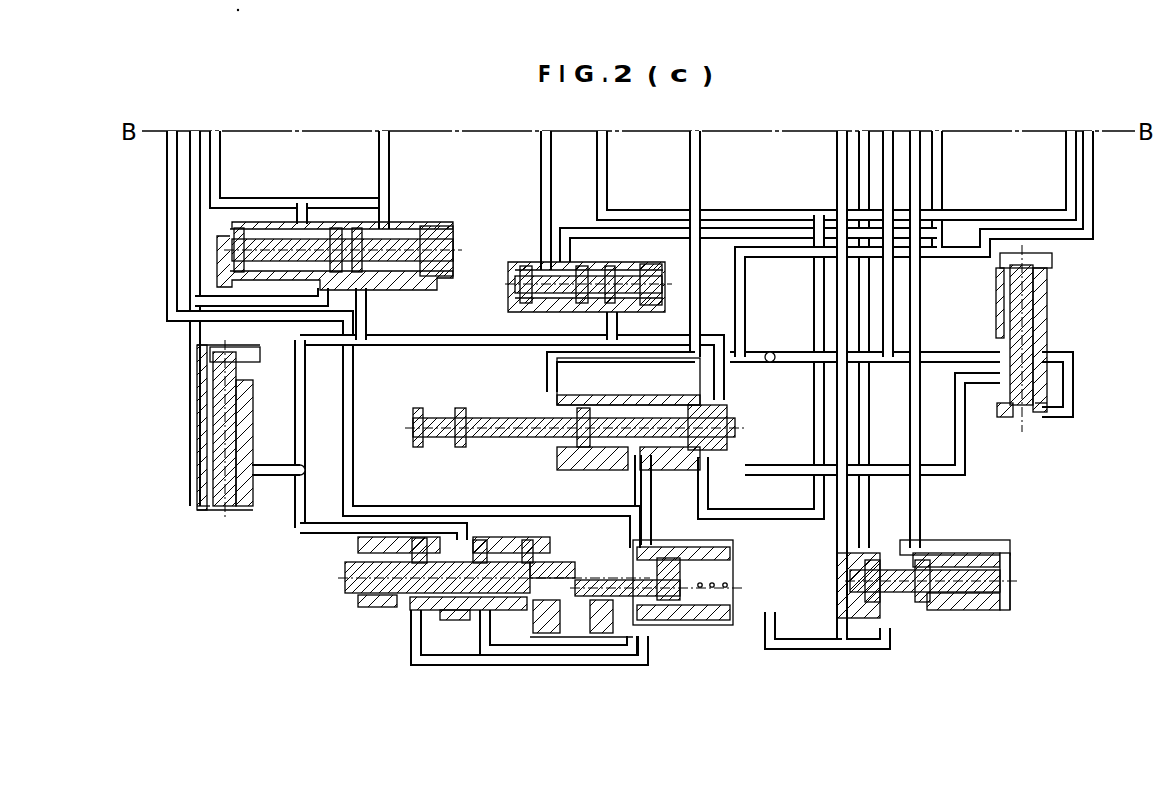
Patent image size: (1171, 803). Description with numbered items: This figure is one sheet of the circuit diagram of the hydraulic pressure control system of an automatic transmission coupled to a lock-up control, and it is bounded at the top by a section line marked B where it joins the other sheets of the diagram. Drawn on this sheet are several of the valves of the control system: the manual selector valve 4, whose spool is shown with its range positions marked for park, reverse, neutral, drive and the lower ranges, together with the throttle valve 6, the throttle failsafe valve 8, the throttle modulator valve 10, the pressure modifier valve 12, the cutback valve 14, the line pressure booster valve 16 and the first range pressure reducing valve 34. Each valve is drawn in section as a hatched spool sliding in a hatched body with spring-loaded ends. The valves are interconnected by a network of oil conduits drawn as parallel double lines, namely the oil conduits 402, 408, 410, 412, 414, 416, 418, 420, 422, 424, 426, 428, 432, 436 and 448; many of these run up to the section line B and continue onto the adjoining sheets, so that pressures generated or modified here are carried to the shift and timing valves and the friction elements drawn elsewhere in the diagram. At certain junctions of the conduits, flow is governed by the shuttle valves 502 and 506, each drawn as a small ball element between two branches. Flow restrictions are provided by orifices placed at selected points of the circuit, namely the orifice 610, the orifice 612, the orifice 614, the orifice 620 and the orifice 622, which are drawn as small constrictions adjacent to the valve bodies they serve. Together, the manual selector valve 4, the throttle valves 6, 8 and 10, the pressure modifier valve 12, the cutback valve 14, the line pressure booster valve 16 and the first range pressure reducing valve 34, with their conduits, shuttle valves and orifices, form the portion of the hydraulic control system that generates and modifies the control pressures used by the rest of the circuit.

The manual selector valve 4 is at (606, 390).
The throttle valve 6 is at (746, 561).
The throttle failsafe valve 8 is at (560, 547).
The throttle modulator valve 10 is at (998, 535).
The pressure modifier valve 12 is at (213, 535).
The cutback valve 14 is at (407, 294).
The line pressure booster valve 16 is at (666, 269).
The first range pressure reducing valve 34 is at (1013, 426).
The oil conduit 402 is at (614, 468).
The oil conduit 408 is at (742, 336).
The oil conduit 410 is at (219, 162).
The oil conduit 412 is at (609, 180).
The oil conduit 414 is at (717, 334).
The oil conduit 416 is at (782, 465).
The oil conduit 418 is at (794, 631).
The oil conduit 420 is at (607, 679).
The oil conduit 422 is at (316, 535).
The oil conduit 424 is at (920, 510).
The oil conduit 426 is at (274, 479).
The oil conduit 428 is at (473, 346).
The oil conduit 432 is at (572, 229).
The oil conduit 436 is at (805, 320).
The oil conduit 448 is at (885, 363).
The shuttle valve 502 is at (775, 371).
The shuttle valve 506 is at (321, 467).
The orifice 610 is at (677, 537).
The orifice 612 is at (1013, 561).
The orifice 614 is at (430, 212).
The orifice 620 is at (1046, 409).
The orifice 622 is at (203, 513).